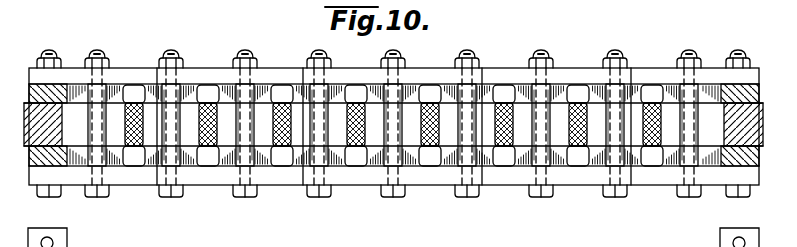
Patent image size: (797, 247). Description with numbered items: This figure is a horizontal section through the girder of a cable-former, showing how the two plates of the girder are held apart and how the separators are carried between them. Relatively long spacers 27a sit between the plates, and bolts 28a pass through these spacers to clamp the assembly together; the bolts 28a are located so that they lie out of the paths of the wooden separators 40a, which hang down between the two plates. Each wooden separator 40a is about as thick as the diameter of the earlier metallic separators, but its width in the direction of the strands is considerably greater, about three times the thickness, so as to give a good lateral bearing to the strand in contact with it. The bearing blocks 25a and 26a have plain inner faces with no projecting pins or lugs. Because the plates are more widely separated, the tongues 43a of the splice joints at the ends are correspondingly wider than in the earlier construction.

The bearing block 25a is at (227, 178).
The bearing block 26a is at (363, 80).
The spacer 27a is at (622, 125).
The bolt 28a is at (612, 194).
The wooden separator 40a is at (507, 113).
The tongue of splice joint 43a is at (740, 120).